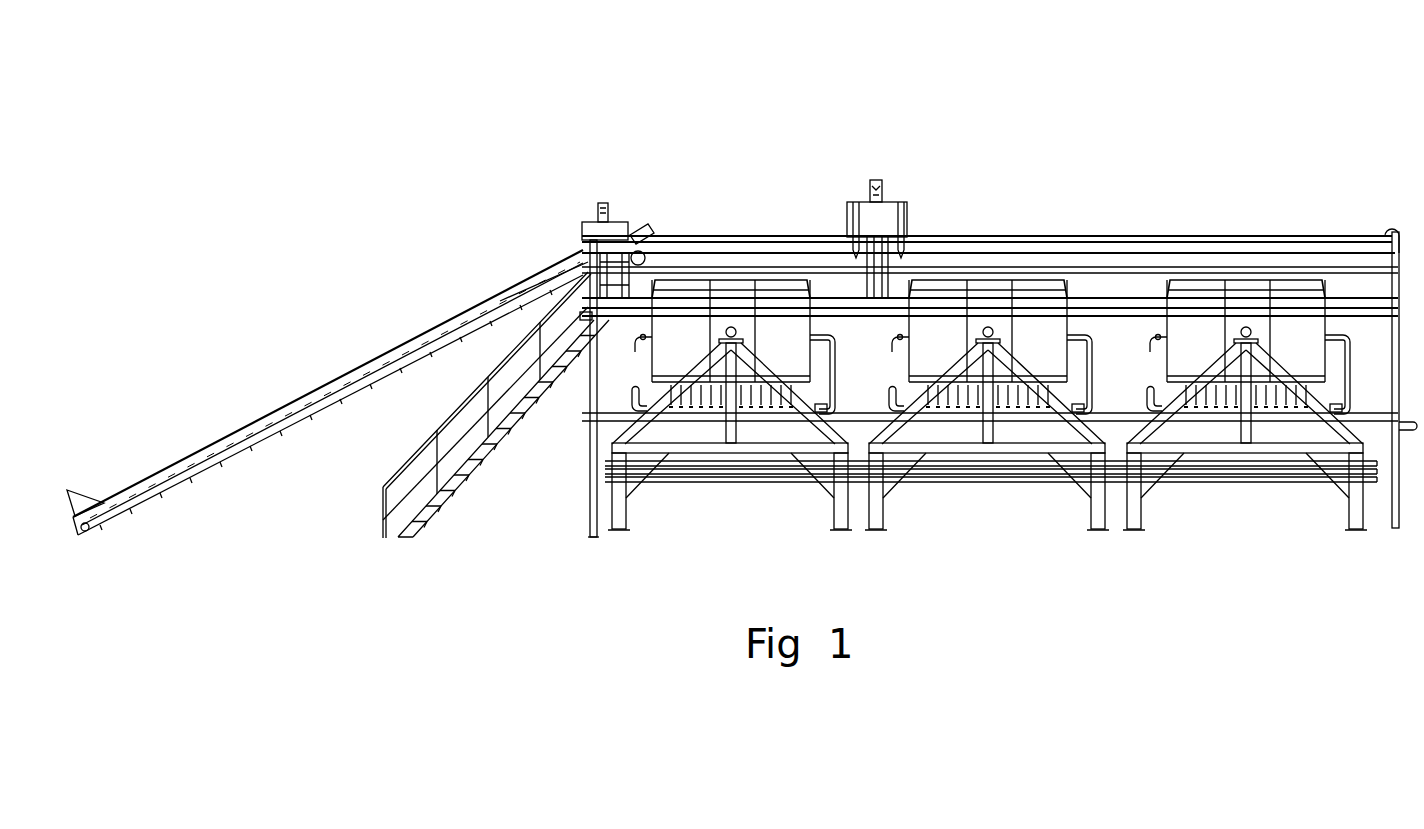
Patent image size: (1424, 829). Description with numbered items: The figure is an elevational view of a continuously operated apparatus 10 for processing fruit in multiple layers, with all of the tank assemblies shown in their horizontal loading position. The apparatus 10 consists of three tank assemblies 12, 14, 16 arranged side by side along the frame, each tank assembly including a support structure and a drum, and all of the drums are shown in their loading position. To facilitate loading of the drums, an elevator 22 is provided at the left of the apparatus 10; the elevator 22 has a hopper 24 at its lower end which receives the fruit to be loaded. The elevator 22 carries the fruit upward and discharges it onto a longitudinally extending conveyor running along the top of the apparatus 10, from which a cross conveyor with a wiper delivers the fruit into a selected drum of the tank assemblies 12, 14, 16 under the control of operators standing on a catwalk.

The continuously operated apparatus for processing fruit 10 is at (1253, 97).
The tank assembly 12 is at (652, 363).
The tank assembly 14 is at (900, 350).
The tank assembly 16 is at (1153, 350).
The elevator 22 is at (318, 385).
The hopper 24 is at (100, 483).